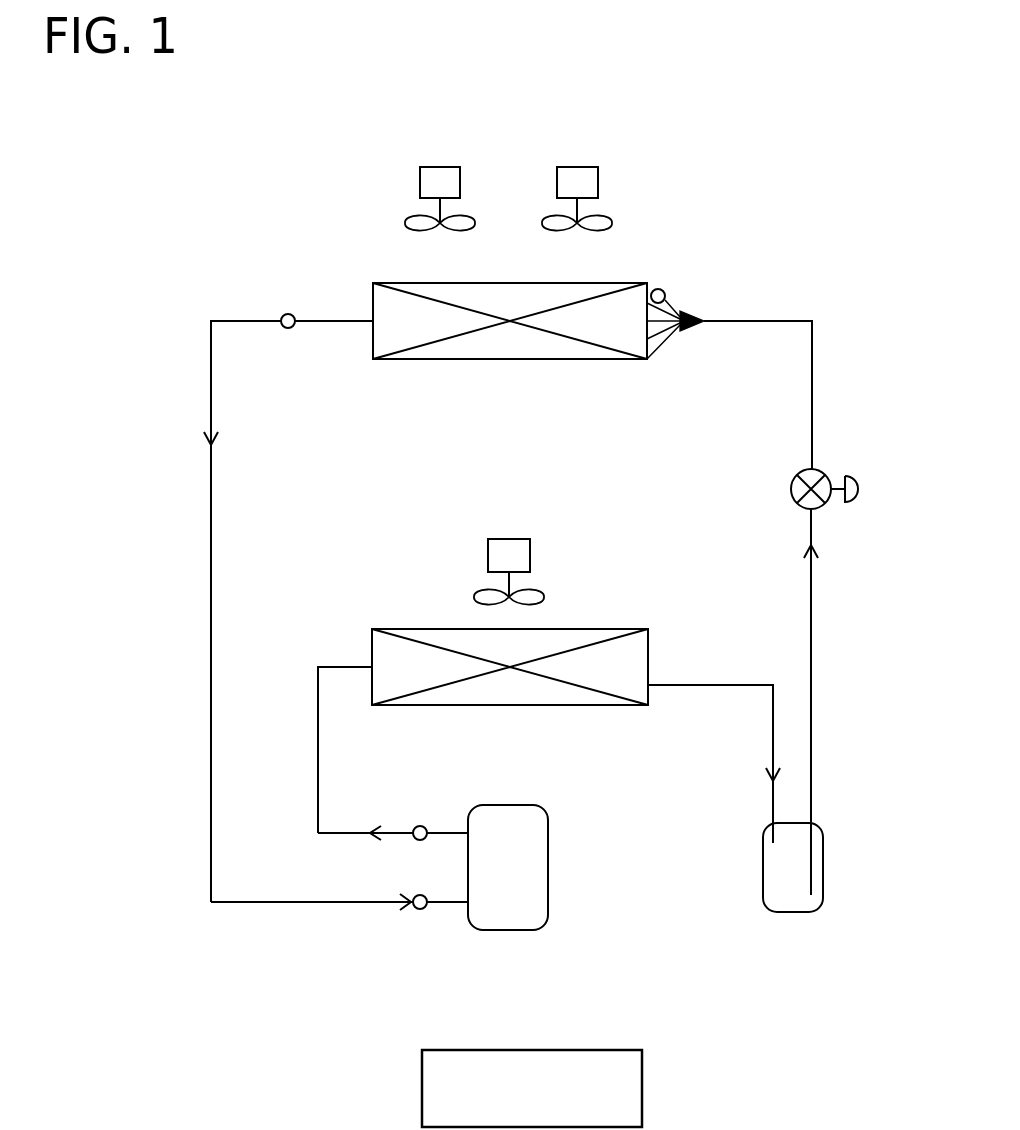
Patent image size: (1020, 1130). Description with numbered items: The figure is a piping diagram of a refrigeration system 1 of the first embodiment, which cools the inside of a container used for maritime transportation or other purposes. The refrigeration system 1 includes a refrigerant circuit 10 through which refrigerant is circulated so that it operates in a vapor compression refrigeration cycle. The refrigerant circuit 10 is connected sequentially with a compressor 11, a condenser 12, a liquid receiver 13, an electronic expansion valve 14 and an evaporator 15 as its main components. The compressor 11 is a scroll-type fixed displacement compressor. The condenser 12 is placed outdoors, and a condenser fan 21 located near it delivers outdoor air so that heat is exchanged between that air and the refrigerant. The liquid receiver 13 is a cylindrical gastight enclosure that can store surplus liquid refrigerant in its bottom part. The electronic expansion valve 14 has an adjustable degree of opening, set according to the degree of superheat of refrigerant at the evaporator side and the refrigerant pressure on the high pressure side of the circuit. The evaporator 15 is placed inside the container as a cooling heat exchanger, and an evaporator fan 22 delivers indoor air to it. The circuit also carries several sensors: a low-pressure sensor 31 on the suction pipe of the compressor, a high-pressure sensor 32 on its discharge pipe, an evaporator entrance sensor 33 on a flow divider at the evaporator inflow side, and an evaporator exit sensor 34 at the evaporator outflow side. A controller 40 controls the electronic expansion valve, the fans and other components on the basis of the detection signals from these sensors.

The refrigeration system 1 is at (850, 135).
The refrigerant circuit 10 is at (163, 455).
The compressor 11 is at (548, 850).
The condenser 12 is at (612, 705).
The liquid receiver 13 is at (816, 824).
The electronic expansion valve 14 is at (822, 472).
The evaporator 15 is at (373, 336).
The condenser fan 21 is at (530, 558).
The evaporator fan 22 is at (440, 167).
The low-pressure sensor 31 is at (420, 910).
The high-pressure sensor 32 is at (420, 826).
The evaporator entrance sensor 33 is at (659, 289).
The evaporator exit sensor 34 is at (288, 314).
The controller 40 is at (645, 1088).